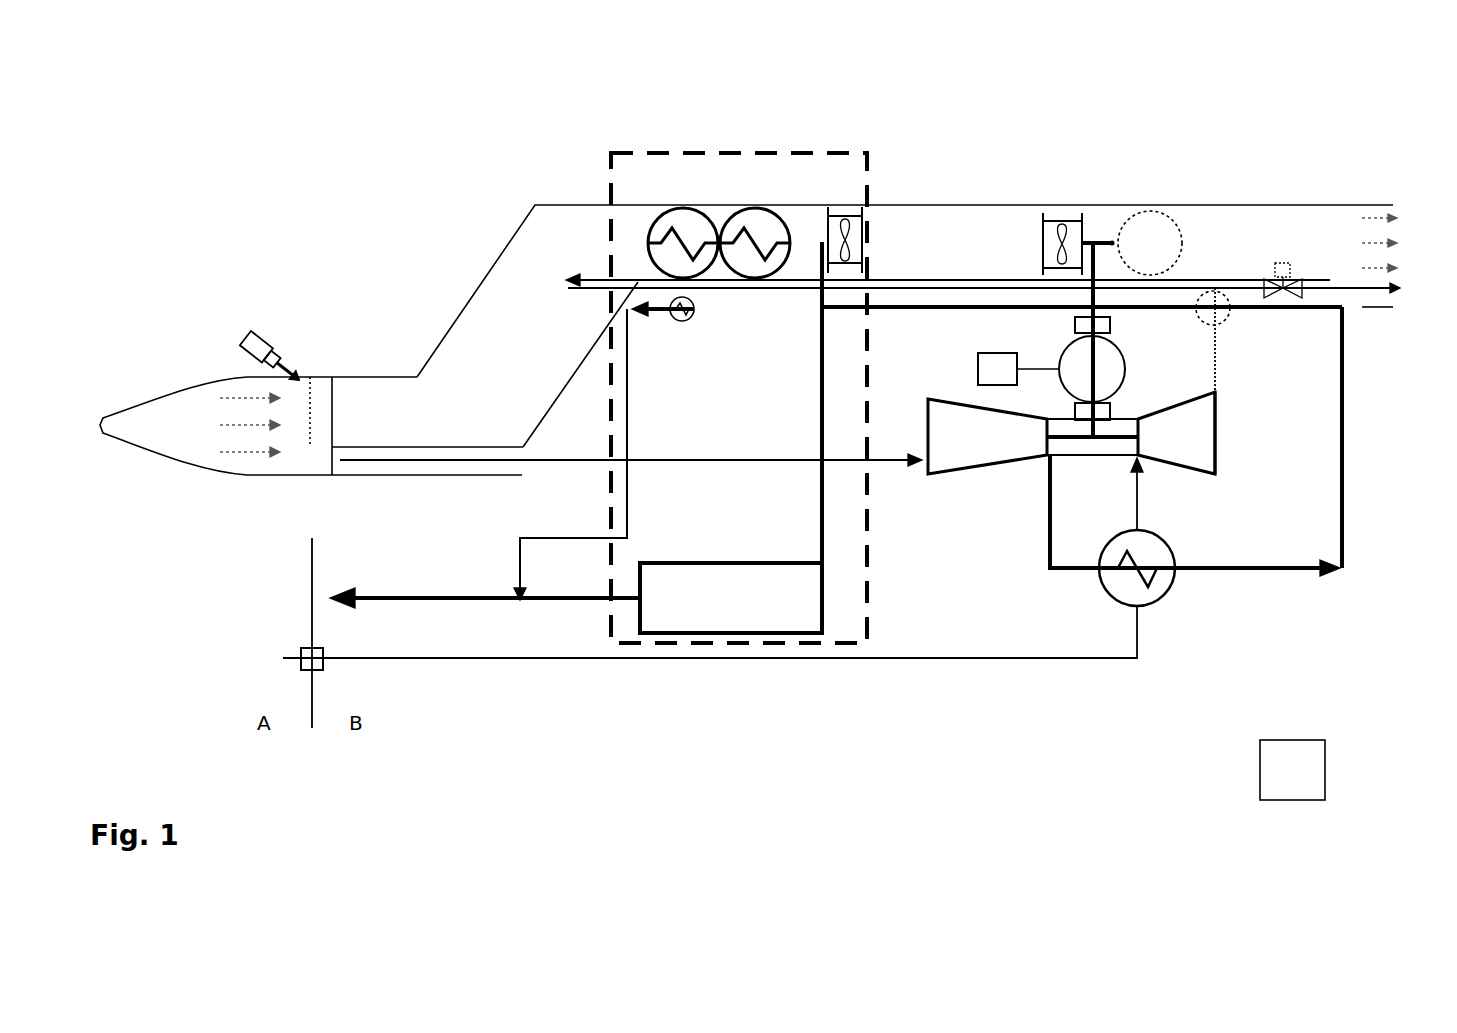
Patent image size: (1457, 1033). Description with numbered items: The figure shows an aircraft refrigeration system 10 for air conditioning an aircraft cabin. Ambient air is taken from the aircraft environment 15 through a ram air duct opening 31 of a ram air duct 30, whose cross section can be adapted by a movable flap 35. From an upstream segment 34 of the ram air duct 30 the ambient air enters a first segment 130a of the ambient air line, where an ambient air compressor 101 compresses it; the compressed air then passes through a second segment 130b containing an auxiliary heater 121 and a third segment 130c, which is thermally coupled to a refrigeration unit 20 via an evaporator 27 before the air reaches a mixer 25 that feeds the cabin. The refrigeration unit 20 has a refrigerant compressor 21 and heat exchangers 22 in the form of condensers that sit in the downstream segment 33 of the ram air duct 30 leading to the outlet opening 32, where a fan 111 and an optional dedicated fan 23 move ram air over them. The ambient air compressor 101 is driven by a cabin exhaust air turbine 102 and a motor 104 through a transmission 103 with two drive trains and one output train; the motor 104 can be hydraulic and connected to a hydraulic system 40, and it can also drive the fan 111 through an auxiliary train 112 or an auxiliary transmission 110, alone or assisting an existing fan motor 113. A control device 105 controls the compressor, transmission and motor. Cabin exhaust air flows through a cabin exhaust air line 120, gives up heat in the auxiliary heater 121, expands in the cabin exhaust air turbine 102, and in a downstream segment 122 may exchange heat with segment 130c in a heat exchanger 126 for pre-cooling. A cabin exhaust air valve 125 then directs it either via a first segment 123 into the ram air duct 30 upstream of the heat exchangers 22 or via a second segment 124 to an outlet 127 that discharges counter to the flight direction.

The aircraft refrigeration system 10 is at (330, 123).
The aircraft environment 15 is at (759, 335).
The refrigeration unit 20 is at (807, 150).
The refrigerant compressor 21 is at (735, 600).
The heat exchangers 22 is at (705, 225).
The fan 23 is at (860, 227).
The mixer 25 is at (472, 603).
The evaporator 27 is at (668, 300).
The ram air duct 30 is at (503, 250).
The ram air duct opening 31 is at (130, 425).
The outlet opening 32 is at (1393, 206).
The segment of the ram air duct 33 is at (482, 318).
The segment of the ram air duct 34 is at (385, 448).
The movable flap 35 is at (262, 343).
The hydraulic system 40 is at (1000, 353).
The ambient air compressor 101 is at (977, 453).
The cabin exhaust air turbine 102 is at (1203, 453).
The transmission 103 is at (1103, 447).
The motor 104 is at (1216, 413).
The control device 105 is at (1292, 770).
The auxiliary transmission 110 is at (1112, 323).
The fan 111 is at (1078, 230).
The auxiliary train 112 is at (1103, 243).
The fan motor 113 is at (1178, 240).
The cabin exhaust air line 120 is at (1103, 658).
The auxiliary heater 121 is at (1170, 592).
The segment of the cabin exhaust air line 122 is at (1113, 390).
The first segment of the cabin exhaust air line 123 is at (922, 288).
The second segment of the cabin exhaust air line 124 is at (1330, 282).
The cabin exhaust air valve 125 is at (1290, 265).
The heat exchanger 126 is at (1218, 300).
The outlet 127 is at (1393, 305).
The first segment of the ambient air line 130a is at (437, 463).
The second segment of the ambient air line 130b is at (1045, 520).
The third segment of the ambient air line 130c is at (880, 307).